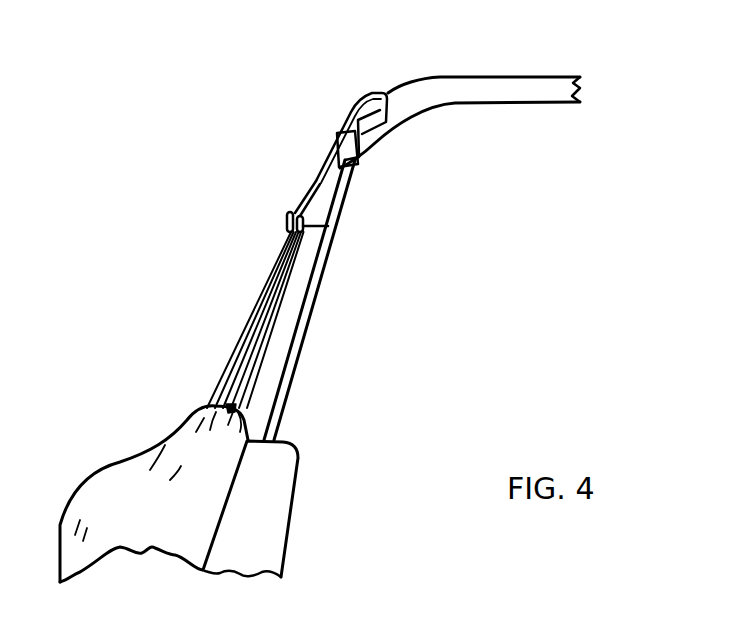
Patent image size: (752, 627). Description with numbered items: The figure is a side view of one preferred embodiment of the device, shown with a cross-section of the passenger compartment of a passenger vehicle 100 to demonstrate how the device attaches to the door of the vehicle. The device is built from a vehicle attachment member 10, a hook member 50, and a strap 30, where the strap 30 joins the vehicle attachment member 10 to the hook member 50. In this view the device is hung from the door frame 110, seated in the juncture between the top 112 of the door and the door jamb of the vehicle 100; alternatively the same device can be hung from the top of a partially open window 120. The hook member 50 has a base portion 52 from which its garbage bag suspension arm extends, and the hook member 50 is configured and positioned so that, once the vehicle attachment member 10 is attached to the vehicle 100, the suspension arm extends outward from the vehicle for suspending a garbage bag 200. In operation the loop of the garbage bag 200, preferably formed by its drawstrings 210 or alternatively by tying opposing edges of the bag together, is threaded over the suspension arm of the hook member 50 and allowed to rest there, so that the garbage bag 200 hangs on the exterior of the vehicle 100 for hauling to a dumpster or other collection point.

The vehicle attachment member 10 is at (366, 70).
The strap 30 is at (302, 132).
The hook member 50 is at (262, 224).
The base portion 52 is at (333, 205).
The passenger vehicle 100 is at (478, 57).
The door frame 110 is at (263, 502).
The top of the door 112 is at (362, 143).
The partially open window 120 is at (310, 310).
The garbage bag 200 is at (150, 505).
The drawstrings 210 is at (250, 308).